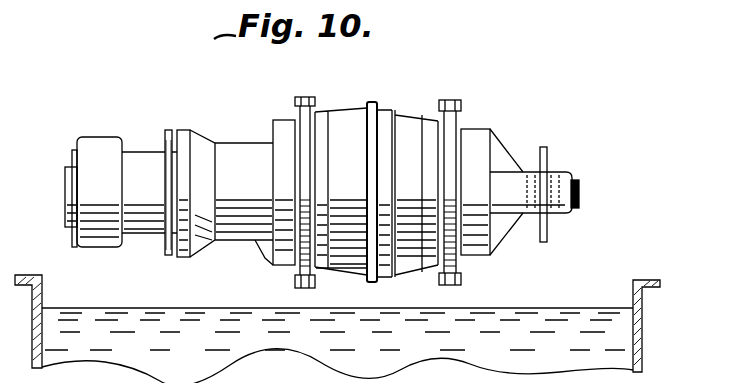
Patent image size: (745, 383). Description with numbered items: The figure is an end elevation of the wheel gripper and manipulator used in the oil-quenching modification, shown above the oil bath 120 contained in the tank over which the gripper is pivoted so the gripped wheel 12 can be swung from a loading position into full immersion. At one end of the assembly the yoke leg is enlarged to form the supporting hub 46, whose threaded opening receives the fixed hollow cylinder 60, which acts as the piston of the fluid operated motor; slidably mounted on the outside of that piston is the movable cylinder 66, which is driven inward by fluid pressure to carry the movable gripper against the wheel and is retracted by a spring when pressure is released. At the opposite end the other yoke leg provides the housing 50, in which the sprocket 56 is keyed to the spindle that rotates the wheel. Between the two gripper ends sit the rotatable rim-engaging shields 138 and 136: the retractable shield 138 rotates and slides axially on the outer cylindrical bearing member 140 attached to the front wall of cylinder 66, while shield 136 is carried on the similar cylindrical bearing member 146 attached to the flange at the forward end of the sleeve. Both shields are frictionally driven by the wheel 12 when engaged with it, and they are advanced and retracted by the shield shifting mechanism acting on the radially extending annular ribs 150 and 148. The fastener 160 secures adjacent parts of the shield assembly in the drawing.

The supporting hub 46 is at (96, 146).
The fixed hollow cylinder 60 is at (142, 160).
The movable cylinder 66 is at (228, 147).
The outer cylindrical bearing member 140 is at (280, 119).
The bolt 160 is at (293, 278).
The retractable shield 138 is at (347, 118).
The wheel 12 is at (383, 118).
The shield 136 is at (408, 128).
The annular rib 148 is at (470, 278).
The cylindrical bearing member 146 is at (478, 129).
The housing 50 is at (568, 172).
The sprocket 56 is at (547, 152).
The oil bath 120 is at (132, 328).
The annular rib 150 is at (328, 277).